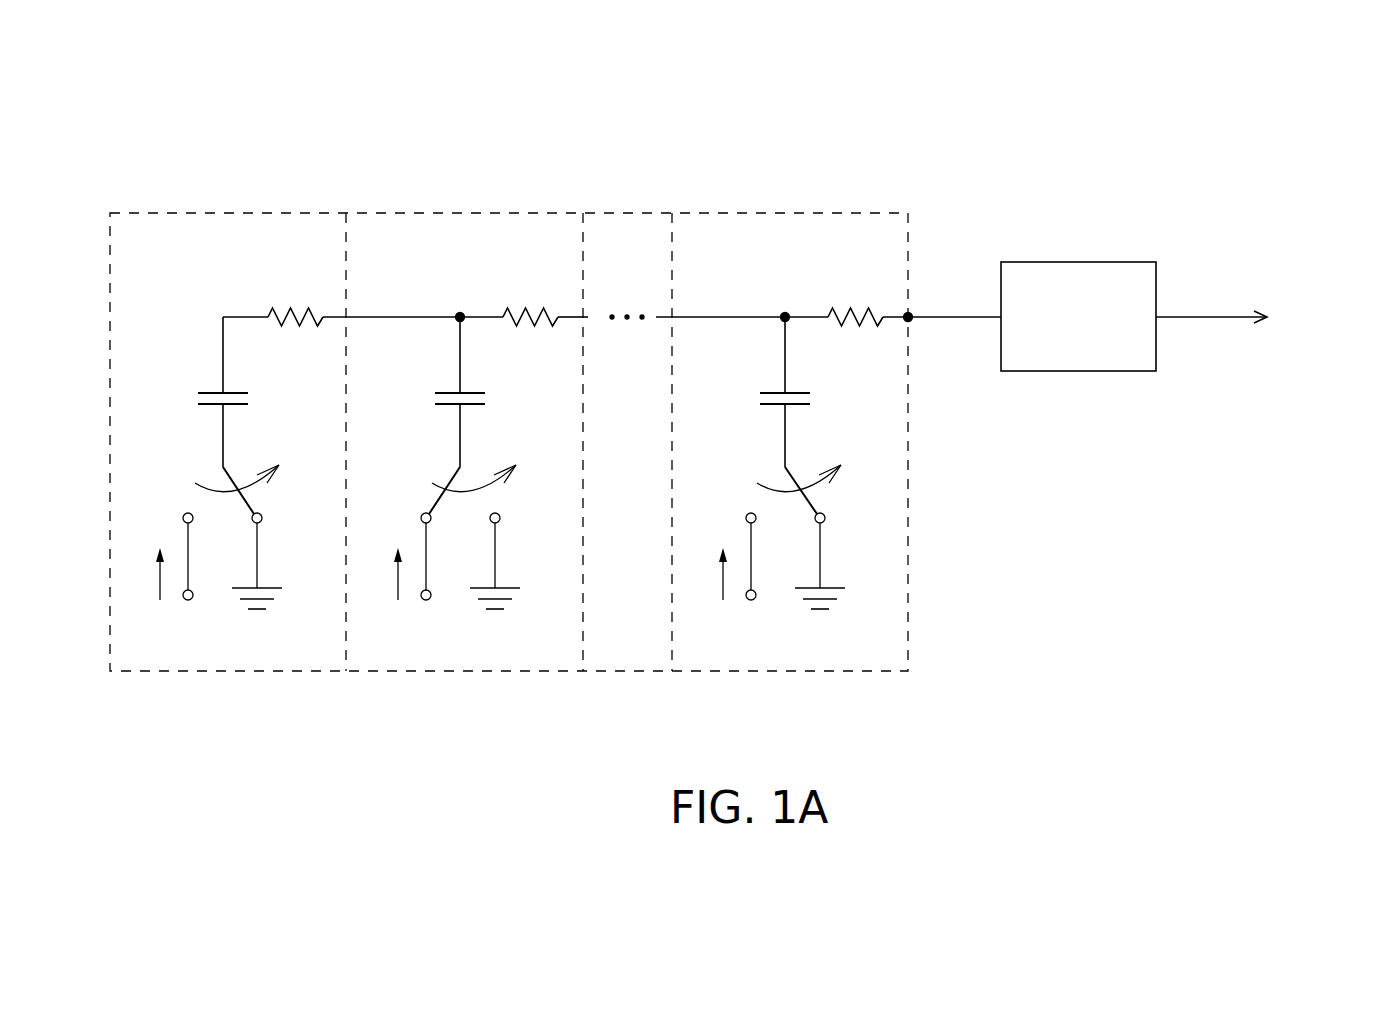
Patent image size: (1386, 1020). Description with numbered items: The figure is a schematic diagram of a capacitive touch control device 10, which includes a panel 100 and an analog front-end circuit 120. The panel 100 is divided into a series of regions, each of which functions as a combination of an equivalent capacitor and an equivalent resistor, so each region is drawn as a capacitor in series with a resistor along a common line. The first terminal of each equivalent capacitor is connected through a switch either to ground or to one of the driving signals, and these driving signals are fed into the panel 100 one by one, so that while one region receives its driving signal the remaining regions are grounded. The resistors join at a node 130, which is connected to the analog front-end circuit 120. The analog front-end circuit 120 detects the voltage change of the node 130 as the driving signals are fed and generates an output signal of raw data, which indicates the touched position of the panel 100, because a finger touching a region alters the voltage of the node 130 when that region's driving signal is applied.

The capacitive touch control device 10 is at (1192, 94).
The panel 100 is at (908, 178).
The analog front-end circuit 120 is at (1137, 262).
The node 130 is at (910, 312).